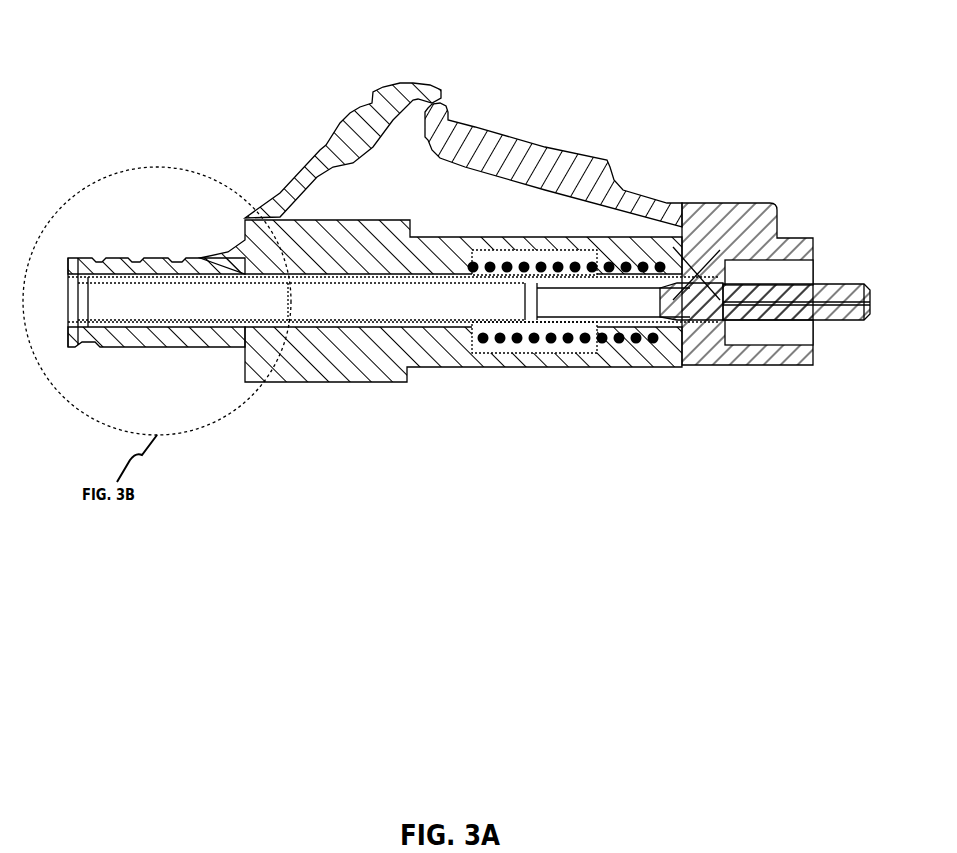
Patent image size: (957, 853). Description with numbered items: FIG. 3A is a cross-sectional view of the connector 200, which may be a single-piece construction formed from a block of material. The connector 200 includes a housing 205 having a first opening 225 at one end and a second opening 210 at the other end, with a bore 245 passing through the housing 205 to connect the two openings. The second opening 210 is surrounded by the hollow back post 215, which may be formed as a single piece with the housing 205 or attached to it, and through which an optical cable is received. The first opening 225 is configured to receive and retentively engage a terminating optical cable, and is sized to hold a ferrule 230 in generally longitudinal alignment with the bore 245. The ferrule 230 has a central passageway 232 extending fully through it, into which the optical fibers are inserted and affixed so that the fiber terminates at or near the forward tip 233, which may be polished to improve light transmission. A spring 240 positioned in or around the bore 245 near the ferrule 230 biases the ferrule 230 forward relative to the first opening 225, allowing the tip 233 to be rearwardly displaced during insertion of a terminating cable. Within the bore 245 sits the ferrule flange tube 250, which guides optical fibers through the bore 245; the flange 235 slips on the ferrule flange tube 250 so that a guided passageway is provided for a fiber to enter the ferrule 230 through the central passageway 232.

The connector 200 is at (676, 118).
The housing 205 is at (518, 150).
The second opening 210 is at (70, 304).
The back post 215 is at (185, 270).
The first opening 225 is at (797, 330).
The ferrule 230 is at (833, 290).
The central passageway 232 is at (725, 303).
The forward tip 233 is at (877, 302).
The flange 235 is at (658, 297).
The spring 240 is at (510, 260).
The bore 245 is at (389, 311).
The ferrule flange tube 250 is at (353, 280).